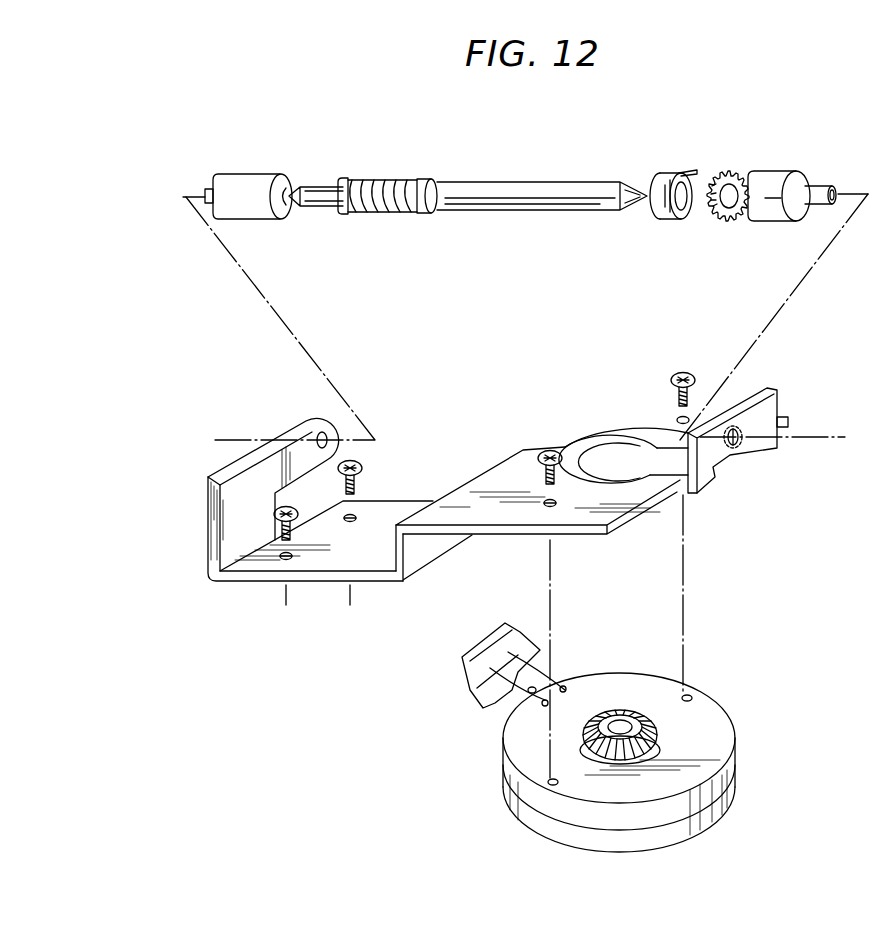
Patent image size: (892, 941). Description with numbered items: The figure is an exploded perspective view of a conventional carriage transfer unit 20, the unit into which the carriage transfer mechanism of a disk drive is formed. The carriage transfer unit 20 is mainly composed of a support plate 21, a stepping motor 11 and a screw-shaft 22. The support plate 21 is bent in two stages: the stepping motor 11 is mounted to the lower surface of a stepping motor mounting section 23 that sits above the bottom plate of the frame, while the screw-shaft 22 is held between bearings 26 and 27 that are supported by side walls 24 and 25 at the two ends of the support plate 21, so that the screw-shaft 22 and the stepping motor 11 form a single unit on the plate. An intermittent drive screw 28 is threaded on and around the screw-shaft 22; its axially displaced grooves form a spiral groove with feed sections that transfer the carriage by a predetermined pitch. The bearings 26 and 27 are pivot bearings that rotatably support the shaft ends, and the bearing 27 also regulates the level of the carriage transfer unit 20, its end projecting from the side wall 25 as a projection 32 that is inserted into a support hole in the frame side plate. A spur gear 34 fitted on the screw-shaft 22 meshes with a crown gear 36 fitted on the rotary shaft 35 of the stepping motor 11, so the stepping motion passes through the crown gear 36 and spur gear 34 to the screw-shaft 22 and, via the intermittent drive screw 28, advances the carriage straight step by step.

The stepping motor 11 is at (722, 782).
The carriage transfer unit 20 is at (436, 599).
The support plate 21 is at (521, 447).
The screw-shaft 22 is at (533, 181).
The stepping motor mounting section 23 is at (628, 411).
The side wall 24 is at (290, 425).
The side wall 25 is at (773, 400).
The bearing 26 is at (273, 172).
The bearing 27 is at (780, 171).
The intermittent drive screw 28 is at (390, 176).
The projection 32 is at (822, 185).
The spur gear 34 is at (726, 171).
The rotary shaft 35 is at (653, 723).
The crown gear 36 is at (643, 755).